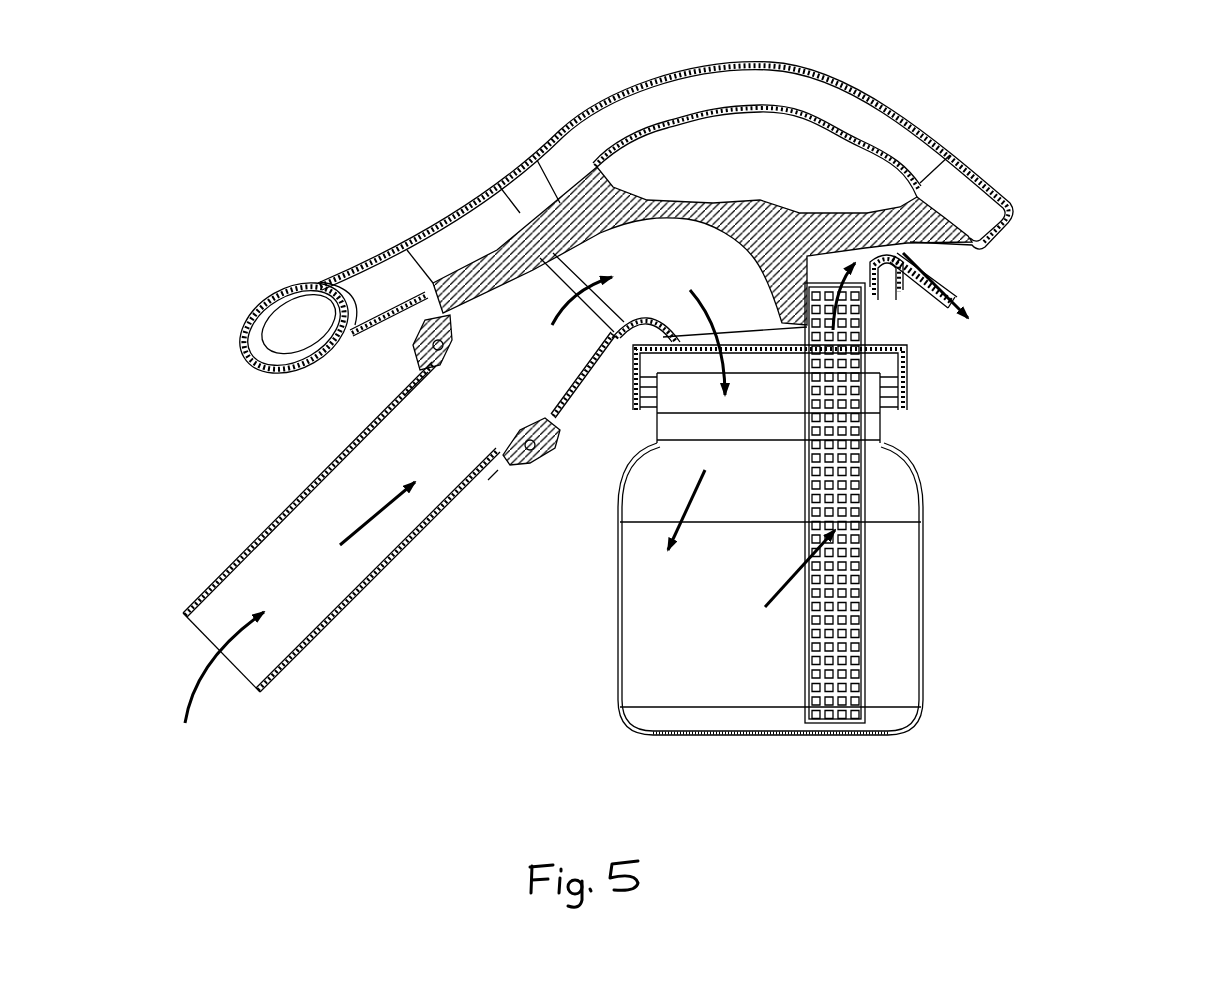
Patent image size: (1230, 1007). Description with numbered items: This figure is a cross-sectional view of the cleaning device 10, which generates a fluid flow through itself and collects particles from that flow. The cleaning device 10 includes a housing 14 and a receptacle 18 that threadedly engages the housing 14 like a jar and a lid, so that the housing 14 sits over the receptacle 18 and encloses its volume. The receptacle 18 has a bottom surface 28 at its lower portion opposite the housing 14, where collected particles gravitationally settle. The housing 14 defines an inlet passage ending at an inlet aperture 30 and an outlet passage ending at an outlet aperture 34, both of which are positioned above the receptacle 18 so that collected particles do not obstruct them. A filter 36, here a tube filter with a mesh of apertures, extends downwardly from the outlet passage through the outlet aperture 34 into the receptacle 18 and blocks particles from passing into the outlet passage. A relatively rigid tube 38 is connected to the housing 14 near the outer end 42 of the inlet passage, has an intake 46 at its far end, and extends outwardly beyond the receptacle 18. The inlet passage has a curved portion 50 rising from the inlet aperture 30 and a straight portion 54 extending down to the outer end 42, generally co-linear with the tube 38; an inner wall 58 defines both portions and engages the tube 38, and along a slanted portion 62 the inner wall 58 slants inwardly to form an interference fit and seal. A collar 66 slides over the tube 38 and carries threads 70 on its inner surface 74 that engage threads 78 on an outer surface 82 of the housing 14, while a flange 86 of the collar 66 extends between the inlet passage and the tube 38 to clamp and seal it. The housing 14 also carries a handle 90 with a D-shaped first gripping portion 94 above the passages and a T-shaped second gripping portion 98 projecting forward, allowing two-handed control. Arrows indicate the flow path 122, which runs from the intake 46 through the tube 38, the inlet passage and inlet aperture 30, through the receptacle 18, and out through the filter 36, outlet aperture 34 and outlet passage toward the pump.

The cleaning device 10 is at (1063, 128).
The housing 14 is at (500, 167).
The receptacle 18 is at (940, 598).
The bottom surface 28 is at (680, 738).
The inlet aperture 30 is at (677, 337).
The outlet aperture 34 is at (880, 338).
The filter 36 is at (870, 498).
The tube 38 is at (390, 557).
The outer end 42 is at (423, 297).
The intake 46 is at (257, 690).
The curved portion 50 is at (722, 224).
The straight portion 54 is at (440, 317).
The inner wall 58 is at (600, 233).
The slanted portion 62 is at (500, 277).
The collar 66 is at (538, 482).
The threads 70 is at (438, 350).
The inner surface 74 is at (437, 337).
The threads 78 is at (548, 440).
The outer surface 82 is at (545, 460).
The flange 86 is at (430, 365).
The handle 90 is at (582, 99).
The first gripping portion 94 is at (800, 67).
The second gripping portion 98 is at (258, 298).
The flow path 122 is at (215, 680).